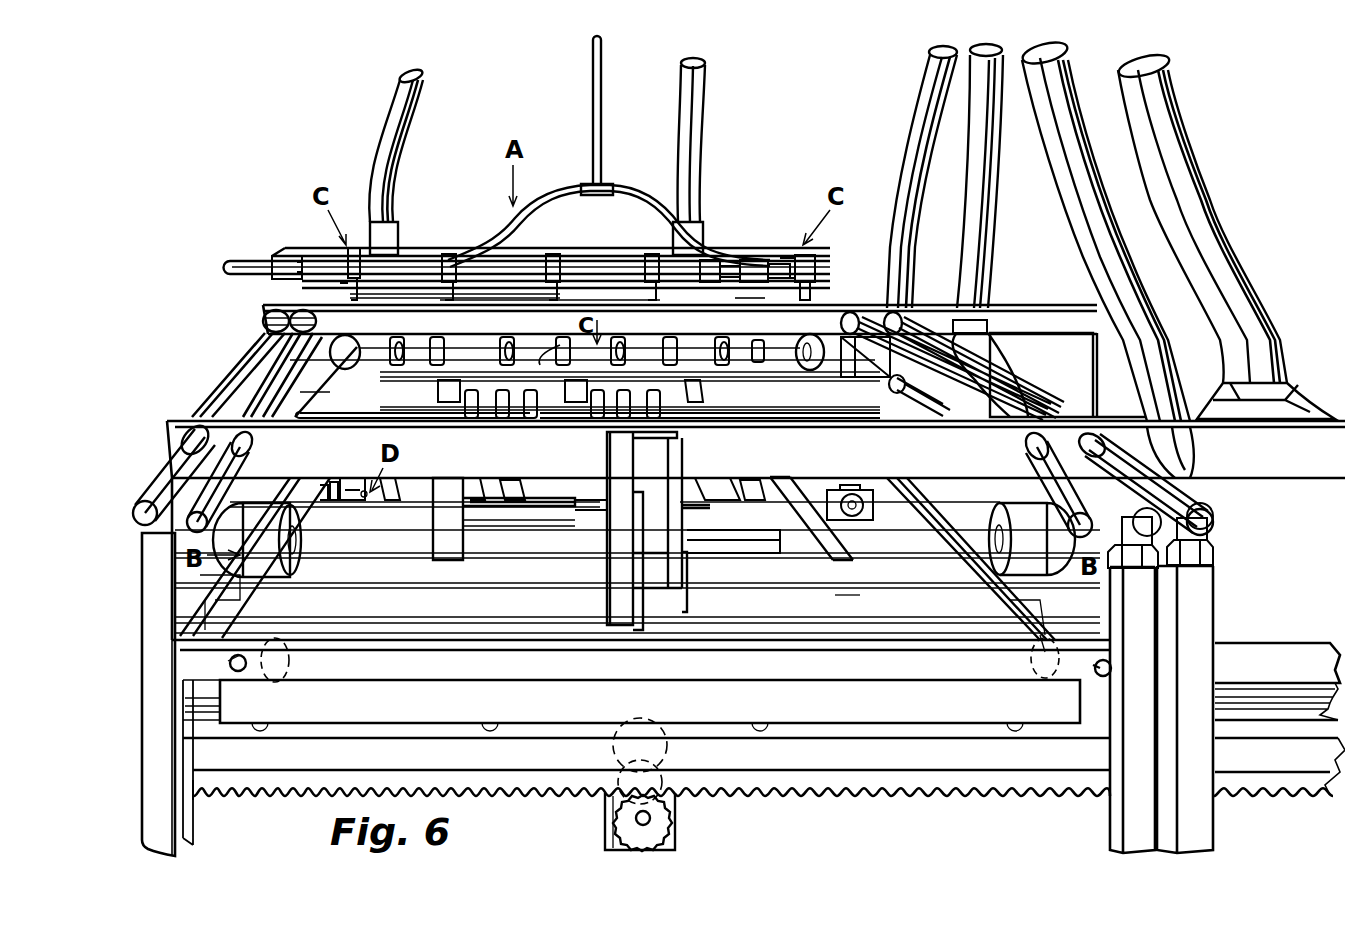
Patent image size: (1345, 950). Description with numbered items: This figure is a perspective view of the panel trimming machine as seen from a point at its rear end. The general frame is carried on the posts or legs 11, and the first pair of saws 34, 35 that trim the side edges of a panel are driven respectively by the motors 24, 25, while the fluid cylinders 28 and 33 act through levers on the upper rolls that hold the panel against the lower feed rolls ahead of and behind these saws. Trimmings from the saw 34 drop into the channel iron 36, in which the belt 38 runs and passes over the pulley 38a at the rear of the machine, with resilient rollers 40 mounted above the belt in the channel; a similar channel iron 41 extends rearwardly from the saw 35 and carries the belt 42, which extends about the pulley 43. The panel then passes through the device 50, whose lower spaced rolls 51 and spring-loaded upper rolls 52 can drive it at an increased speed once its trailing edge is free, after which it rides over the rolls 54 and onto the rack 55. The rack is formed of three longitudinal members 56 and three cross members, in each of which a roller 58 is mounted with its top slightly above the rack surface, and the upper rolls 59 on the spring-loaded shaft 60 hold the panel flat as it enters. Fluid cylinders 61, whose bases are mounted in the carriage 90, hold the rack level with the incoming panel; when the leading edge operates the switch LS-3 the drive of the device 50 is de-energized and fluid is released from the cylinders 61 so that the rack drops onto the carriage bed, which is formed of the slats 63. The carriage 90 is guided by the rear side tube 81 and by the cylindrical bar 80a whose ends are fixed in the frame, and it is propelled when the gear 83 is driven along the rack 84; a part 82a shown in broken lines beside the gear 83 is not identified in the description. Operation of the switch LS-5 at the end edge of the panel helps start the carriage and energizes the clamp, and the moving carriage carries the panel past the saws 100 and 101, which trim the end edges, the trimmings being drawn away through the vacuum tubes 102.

The posts or legs 11 is at (197, 812).
The motor 24 is at (345, 285).
The motor 25 is at (768, 300).
The fluid cylinder 28 is at (548, 270).
The cylinder 33 is at (650, 270).
The saw 34 is at (400, 240).
The saw 35 is at (700, 240).
The channel iron 36 is at (410, 408).
The belt 38 is at (257, 605).
The pulley 38a is at (285, 660).
The resilient rollers 40 is at (1000, 490).
The channel iron 41 is at (875, 490).
The belt 42 is at (1008, 602).
The pulley 43 is at (1030, 660).
The device 50 is at (808, 250).
The rolls 51 is at (560, 348).
The rolls 52 is at (500, 345).
The rolls 54 is at (430, 392).
The rack 55 is at (445, 490).
The members 56 is at (605, 475).
The roller 58 is at (722, 498).
The upper rolls 59 is at (510, 432).
The shaft 60 is at (372, 430).
The fluid cylinders 61 is at (775, 545).
The slats 63 is at (858, 616).
The cylindrical bar 80a is at (1302, 642).
The side tube 81 is at (958, 722).
The shaft 82a is at (668, 750).
The gear 83 is at (672, 795).
The rack 84 is at (850, 798).
The carriage 90 is at (410, 717).
The saw 100 is at (1003, 367).
The saw 101 is at (1297, 400).
The vacuum tubes 102 is at (997, 260).
The switch LS-3 is at (587, 512).
The switch LS-5 is at (687, 565).